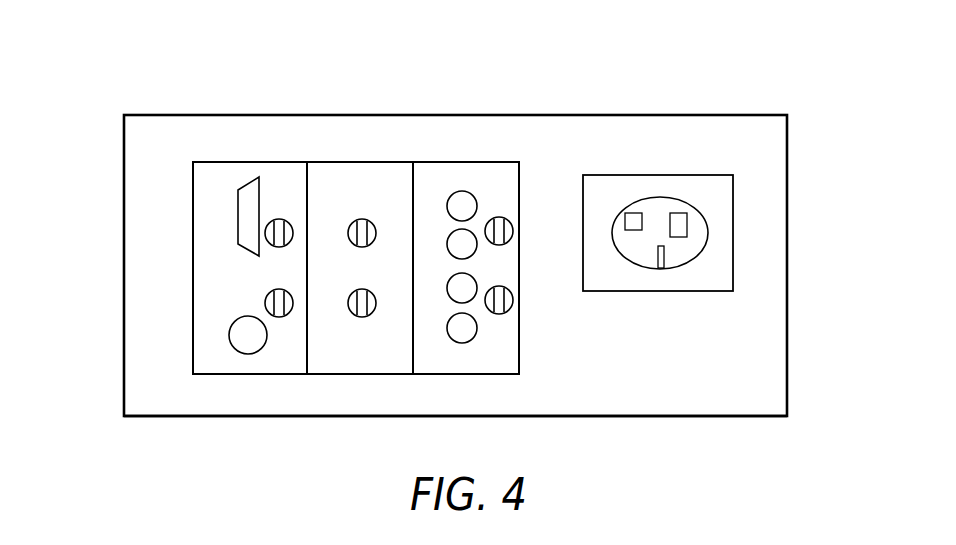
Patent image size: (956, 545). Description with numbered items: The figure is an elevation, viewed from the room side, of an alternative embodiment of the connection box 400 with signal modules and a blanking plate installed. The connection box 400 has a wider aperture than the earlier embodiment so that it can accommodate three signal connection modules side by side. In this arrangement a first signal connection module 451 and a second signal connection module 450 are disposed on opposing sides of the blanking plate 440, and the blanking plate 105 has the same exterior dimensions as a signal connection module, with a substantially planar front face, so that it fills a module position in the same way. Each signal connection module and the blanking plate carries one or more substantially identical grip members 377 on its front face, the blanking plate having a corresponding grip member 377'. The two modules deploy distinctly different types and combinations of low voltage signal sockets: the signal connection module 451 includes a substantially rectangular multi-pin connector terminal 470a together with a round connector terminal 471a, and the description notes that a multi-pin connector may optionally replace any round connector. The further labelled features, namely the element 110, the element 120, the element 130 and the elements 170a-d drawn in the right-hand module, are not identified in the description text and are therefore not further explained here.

The connection box 400 is at (398, 78).
The housing 110 is at (650, 403).
The blanking plate 105 is at (364, 374).
The signal connection module 451 is at (248, 374).
The blanking plate 440 is at (324, 162).
The signal connection module 450 is at (465, 374).
The substantially rectangular multi-pin connector terminal 470a is at (247, 180).
The round connector terminal 471a is at (229, 336).
The indicator lights 170a-d is at (462, 191).
The grip member 377 is at (436, 270).
The grip member 377' is at (349, 155).
The electrical outlet 120 is at (662, 175).
The receptacle face 130 is at (662, 268).